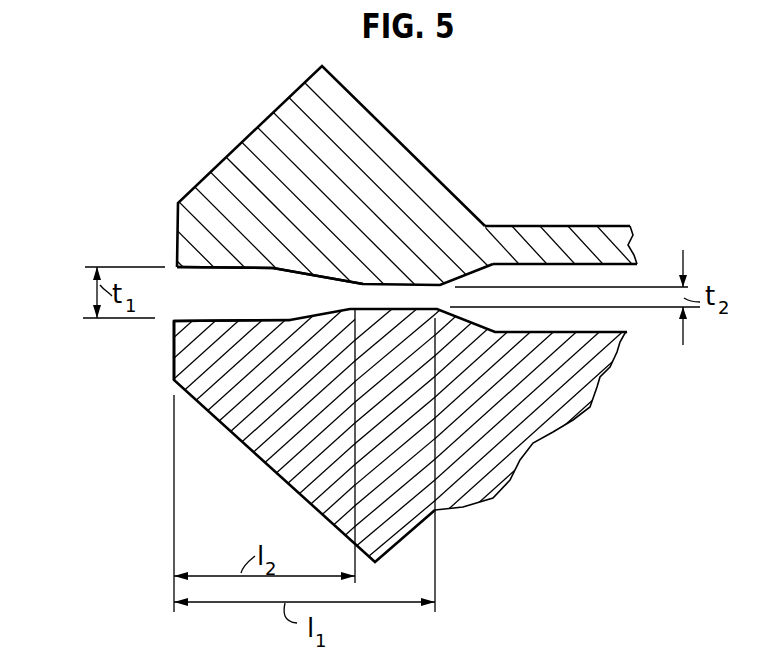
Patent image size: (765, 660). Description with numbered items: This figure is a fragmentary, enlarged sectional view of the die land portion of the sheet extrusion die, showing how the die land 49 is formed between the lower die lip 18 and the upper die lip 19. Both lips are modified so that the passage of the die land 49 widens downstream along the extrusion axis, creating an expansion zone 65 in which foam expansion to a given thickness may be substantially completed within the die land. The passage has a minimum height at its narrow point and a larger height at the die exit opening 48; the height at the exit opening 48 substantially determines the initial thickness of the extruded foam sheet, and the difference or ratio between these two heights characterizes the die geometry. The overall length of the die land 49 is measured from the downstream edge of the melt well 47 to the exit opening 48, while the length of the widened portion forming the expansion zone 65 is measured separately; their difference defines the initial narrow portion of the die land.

The lower die lip 18 is at (320, 465).
The upper die lip 19 is at (388, 204).
The melt well 47 is at (614, 282).
The die exit opening 48 is at (84, 293).
The die land 49 is at (253, 297).
The expansion zone 65 is at (197, 293).